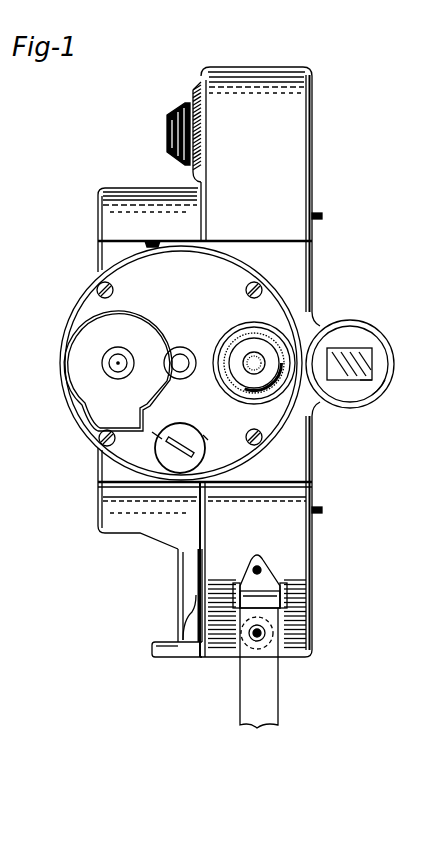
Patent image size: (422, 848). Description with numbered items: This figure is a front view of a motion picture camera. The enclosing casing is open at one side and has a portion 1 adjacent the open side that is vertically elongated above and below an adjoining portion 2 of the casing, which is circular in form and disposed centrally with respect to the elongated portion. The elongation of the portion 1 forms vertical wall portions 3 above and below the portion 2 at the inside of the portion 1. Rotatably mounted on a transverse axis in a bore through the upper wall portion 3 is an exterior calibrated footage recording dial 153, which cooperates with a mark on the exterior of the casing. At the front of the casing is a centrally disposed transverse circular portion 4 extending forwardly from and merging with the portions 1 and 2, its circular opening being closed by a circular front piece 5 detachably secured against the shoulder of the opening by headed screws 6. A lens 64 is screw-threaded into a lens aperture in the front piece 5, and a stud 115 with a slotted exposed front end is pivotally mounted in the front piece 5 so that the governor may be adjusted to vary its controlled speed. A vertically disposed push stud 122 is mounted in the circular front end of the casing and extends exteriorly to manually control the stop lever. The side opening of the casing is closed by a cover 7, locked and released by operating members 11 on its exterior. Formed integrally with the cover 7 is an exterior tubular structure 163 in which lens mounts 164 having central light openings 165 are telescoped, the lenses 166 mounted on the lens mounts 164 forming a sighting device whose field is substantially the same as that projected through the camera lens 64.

The vertically elongated casing portion 1 is at (258, 80).
The circular casing portion 2 is at (133, 197).
The vertical wall portions 3 is at (193, 95).
The exterior calibrated footage recording dial 153 is at (192, 103).
The cover 7 is at (314, 145).
The operating members 11 is at (322, 216).
The push stud 122 is at (148, 242).
The transverse circular portion 4 is at (79, 300).
The headed screws 6 is at (100, 283).
The circular front piece 5 is at (110, 408).
The stud 115 is at (167, 448).
The lens 64 is at (255, 352).
The tubular structure 163 is at (322, 327).
The lenses 166 is at (351, 361).
The lens mounts 164 is at (376, 378).
The central light openings 165 is at (362, 380).